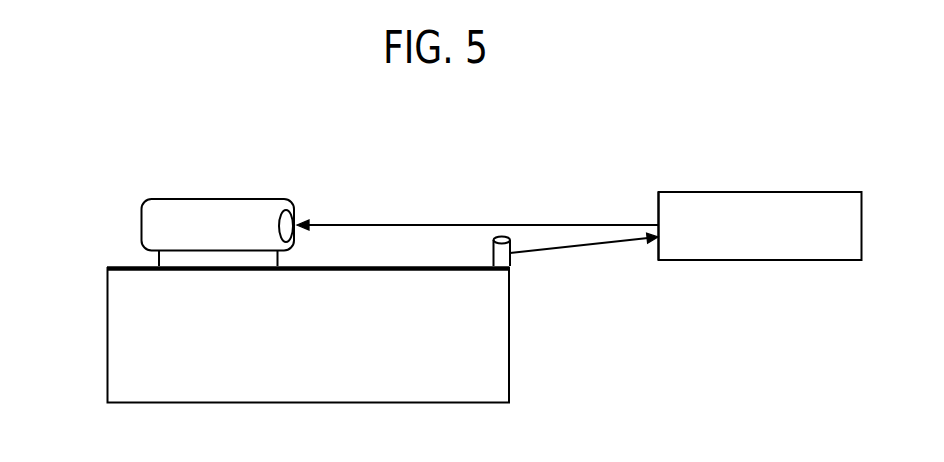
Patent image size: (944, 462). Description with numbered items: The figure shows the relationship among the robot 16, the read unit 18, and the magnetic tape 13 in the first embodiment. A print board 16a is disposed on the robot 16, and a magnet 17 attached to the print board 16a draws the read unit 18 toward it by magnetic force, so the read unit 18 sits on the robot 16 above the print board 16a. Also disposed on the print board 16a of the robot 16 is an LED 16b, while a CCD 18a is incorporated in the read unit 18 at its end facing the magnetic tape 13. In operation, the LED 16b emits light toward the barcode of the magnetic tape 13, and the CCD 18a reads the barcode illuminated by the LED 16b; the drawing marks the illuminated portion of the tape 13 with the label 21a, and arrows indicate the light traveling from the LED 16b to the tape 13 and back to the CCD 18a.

The magnetic tape 13 is at (793, 191).
The robot 16 is at (107, 358).
The print board 16a is at (107, 272).
The LED 16b is at (493, 255).
The magnet 17 is at (160, 265).
The read unit 18 is at (179, 199).
The CCD 18a is at (282, 210).
The light receiving portion 21a is at (658, 205).